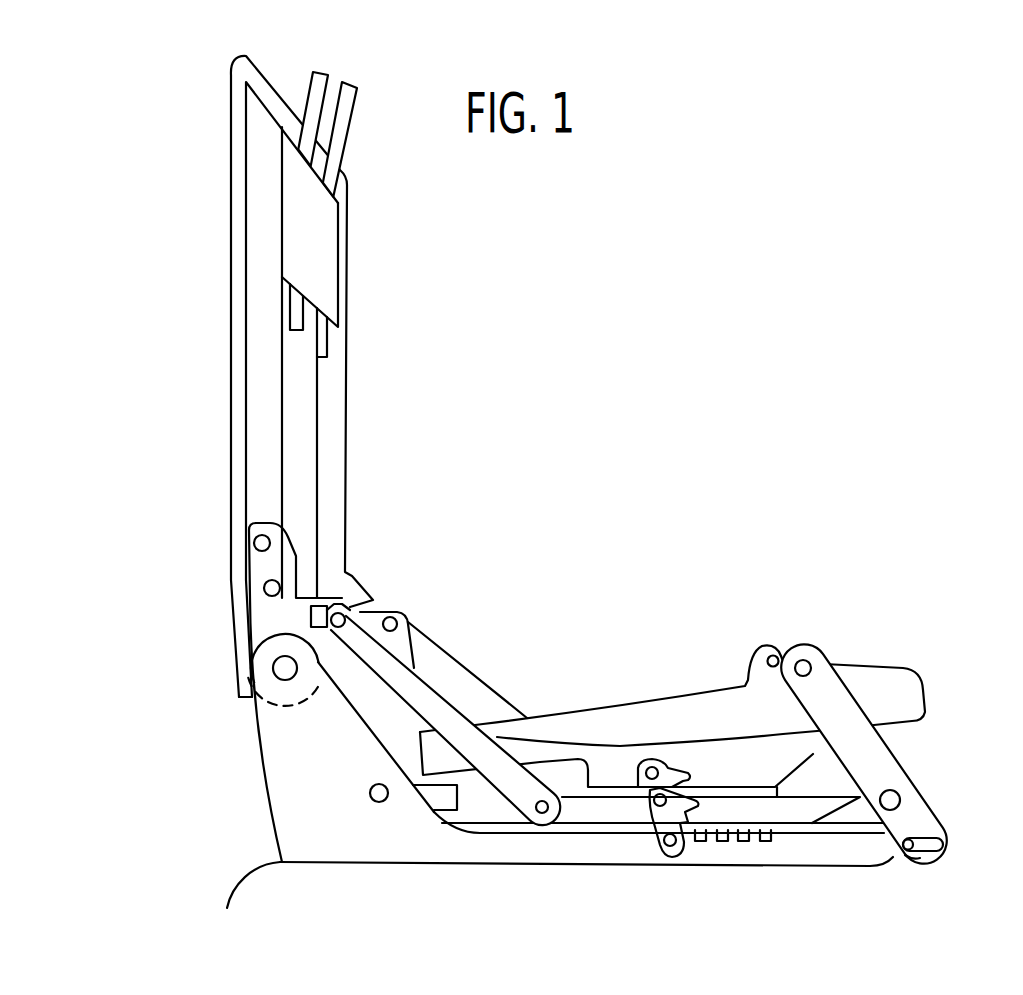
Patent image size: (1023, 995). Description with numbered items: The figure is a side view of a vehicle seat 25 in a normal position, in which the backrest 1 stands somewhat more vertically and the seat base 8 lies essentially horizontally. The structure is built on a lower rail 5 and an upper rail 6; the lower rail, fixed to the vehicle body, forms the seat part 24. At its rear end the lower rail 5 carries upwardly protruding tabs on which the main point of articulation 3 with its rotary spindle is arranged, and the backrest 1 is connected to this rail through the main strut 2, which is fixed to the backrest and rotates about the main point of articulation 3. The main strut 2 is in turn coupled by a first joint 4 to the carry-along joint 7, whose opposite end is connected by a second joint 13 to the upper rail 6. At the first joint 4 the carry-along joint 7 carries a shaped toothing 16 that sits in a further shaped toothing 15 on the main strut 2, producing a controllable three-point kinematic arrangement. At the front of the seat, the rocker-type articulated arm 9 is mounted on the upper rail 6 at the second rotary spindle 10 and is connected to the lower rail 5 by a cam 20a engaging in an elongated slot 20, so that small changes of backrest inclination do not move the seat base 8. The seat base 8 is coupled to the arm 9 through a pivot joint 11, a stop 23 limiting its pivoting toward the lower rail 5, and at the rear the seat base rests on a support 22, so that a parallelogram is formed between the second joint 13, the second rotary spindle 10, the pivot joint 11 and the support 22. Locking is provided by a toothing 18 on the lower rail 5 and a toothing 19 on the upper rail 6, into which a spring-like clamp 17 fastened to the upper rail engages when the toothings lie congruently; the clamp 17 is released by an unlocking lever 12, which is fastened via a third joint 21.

The backrest 1 is at (325, 246).
The main strut 2 is at (257, 565).
The main point of articulation 3 is at (283, 668).
The first joint 4 is at (363, 617).
The lower rail 5 is at (288, 803).
The upper rail 6 is at (605, 828).
The carry-along joint 7 is at (427, 690).
The seat base 8 is at (620, 712).
The rocker-type articulated arm 9 is at (873, 748).
The second rotary spindle 10 is at (901, 797).
The pivot joint 11 is at (809, 665).
The unlocking lever 12 is at (666, 852).
The second joint 13 is at (543, 820).
The shaped toothing 15 is at (320, 600).
The shaped toothing 16 is at (345, 600).
The clamp 17 is at (780, 832).
The toothing 18 is at (763, 842).
The toothing 19 is at (724, 842).
The elongated slot 20 is at (940, 825).
The cam 20a is at (942, 897).
The third joint 21 is at (645, 808).
The support 22 is at (428, 800).
The stop 23 is at (776, 652).
The seat part 24 is at (312, 901).
The vehicle seat 25 is at (515, 449).